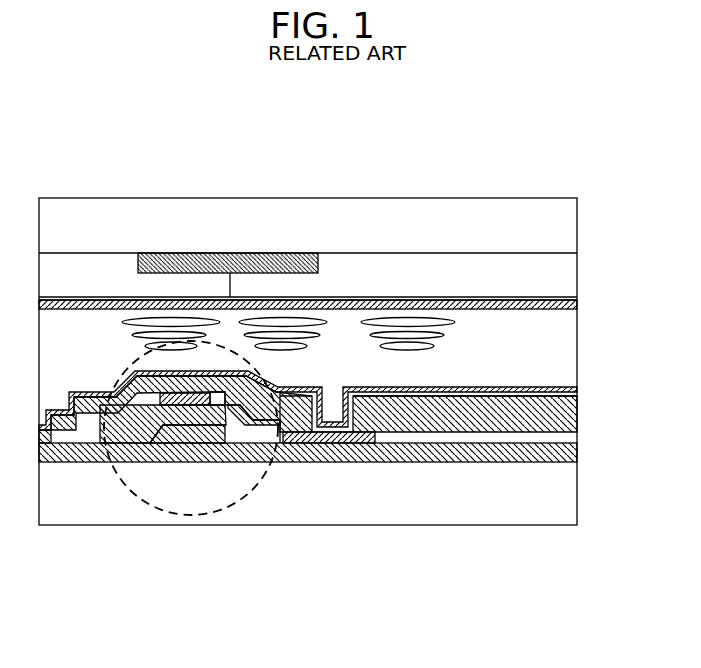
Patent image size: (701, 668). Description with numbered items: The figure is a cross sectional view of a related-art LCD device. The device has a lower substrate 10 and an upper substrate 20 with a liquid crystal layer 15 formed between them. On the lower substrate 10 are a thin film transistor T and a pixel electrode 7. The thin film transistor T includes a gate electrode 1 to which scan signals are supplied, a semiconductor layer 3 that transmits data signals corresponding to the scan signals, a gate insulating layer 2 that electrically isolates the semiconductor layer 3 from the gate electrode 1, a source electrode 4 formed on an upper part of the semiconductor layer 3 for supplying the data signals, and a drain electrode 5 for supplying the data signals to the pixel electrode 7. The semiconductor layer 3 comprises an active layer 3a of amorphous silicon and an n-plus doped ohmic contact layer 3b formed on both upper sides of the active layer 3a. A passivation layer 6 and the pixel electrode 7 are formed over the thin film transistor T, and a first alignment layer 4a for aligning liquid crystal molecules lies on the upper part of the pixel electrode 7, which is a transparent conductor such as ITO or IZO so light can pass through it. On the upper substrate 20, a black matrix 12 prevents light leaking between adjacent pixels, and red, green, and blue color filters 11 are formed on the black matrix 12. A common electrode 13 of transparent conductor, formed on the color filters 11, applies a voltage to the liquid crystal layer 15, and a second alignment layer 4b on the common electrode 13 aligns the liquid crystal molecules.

The gate electrode 1 is at (178, 463).
The gate insulating layer 2 is at (572, 448).
The semiconductor layer 3 is at (280, 568).
The active layer 3a is at (263, 437).
The ohmic contact layer 3b is at (165, 403).
The source electrode 4 is at (116, 418).
The first alignment layer 4a is at (577, 388).
The second alignment layer 4b is at (577, 308).
The drain electrode 5 is at (330, 443).
The passivation layer 6 is at (572, 420).
The pixel electrode 7 is at (577, 393).
The lower substrate 10 is at (572, 490).
The color filters 11 is at (572, 270).
The black matrix 12 is at (275, 262).
The common electrode 13 is at (577, 298).
The liquid crystal layer 15 is at (572, 348).
The upper substrate 20 is at (572, 228).
The thin film transistor T is at (111, 366).